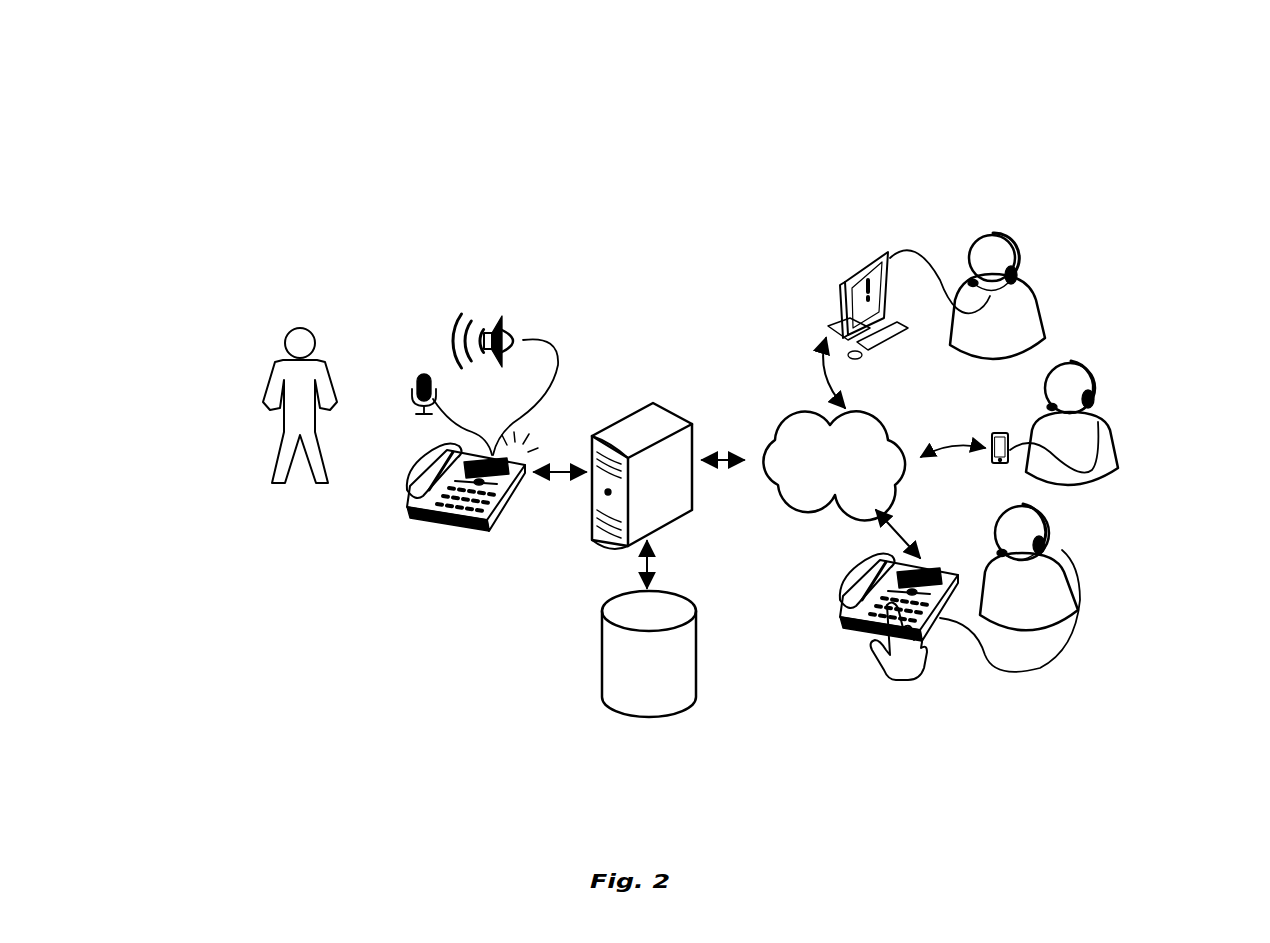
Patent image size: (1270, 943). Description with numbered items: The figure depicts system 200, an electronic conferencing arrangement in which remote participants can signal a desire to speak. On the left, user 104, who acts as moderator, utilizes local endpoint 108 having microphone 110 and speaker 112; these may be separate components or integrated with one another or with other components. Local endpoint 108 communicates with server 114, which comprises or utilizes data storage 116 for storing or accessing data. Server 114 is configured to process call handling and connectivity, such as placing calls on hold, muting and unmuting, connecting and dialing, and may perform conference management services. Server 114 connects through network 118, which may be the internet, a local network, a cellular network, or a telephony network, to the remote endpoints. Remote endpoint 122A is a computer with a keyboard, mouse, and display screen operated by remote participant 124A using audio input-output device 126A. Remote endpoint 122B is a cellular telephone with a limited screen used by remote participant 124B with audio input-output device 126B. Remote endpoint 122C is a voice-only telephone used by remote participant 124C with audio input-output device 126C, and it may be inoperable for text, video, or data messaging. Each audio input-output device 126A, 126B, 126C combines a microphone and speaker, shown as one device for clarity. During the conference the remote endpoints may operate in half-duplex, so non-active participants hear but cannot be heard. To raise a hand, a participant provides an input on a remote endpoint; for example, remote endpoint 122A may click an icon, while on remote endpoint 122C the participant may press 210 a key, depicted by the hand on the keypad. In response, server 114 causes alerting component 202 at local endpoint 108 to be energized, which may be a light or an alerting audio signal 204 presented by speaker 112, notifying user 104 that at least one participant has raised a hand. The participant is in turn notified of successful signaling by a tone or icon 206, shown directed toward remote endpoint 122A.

The system 200 is at (1165, 100).
The user 104 is at (273, 387).
The local endpoint 108 is at (420, 494).
The microphone 110 is at (418, 372).
The speaker 112 is at (513, 329).
The server 114 is at (639, 495).
The data storage 116 is at (649, 654).
The network 118 is at (778, 418).
The remote endpoint 122A is at (871, 257).
The remote endpoint 122B is at (992, 432).
The remote endpoint 122C is at (867, 633).
The remote participant 124A is at (1034, 290).
The remote participant 124B is at (1116, 413).
The remote participant 124C is at (1069, 567).
The audio input-output device 126A is at (1017, 272).
The audio input-output device 126B is at (1091, 393).
The audio input-output device 126C is at (1050, 540).
The alerting component 202 is at (536, 433).
The alerting audio signal 204 is at (449, 257).
The tone or icon 206 is at (803, 272).
The press 210 is at (903, 676).